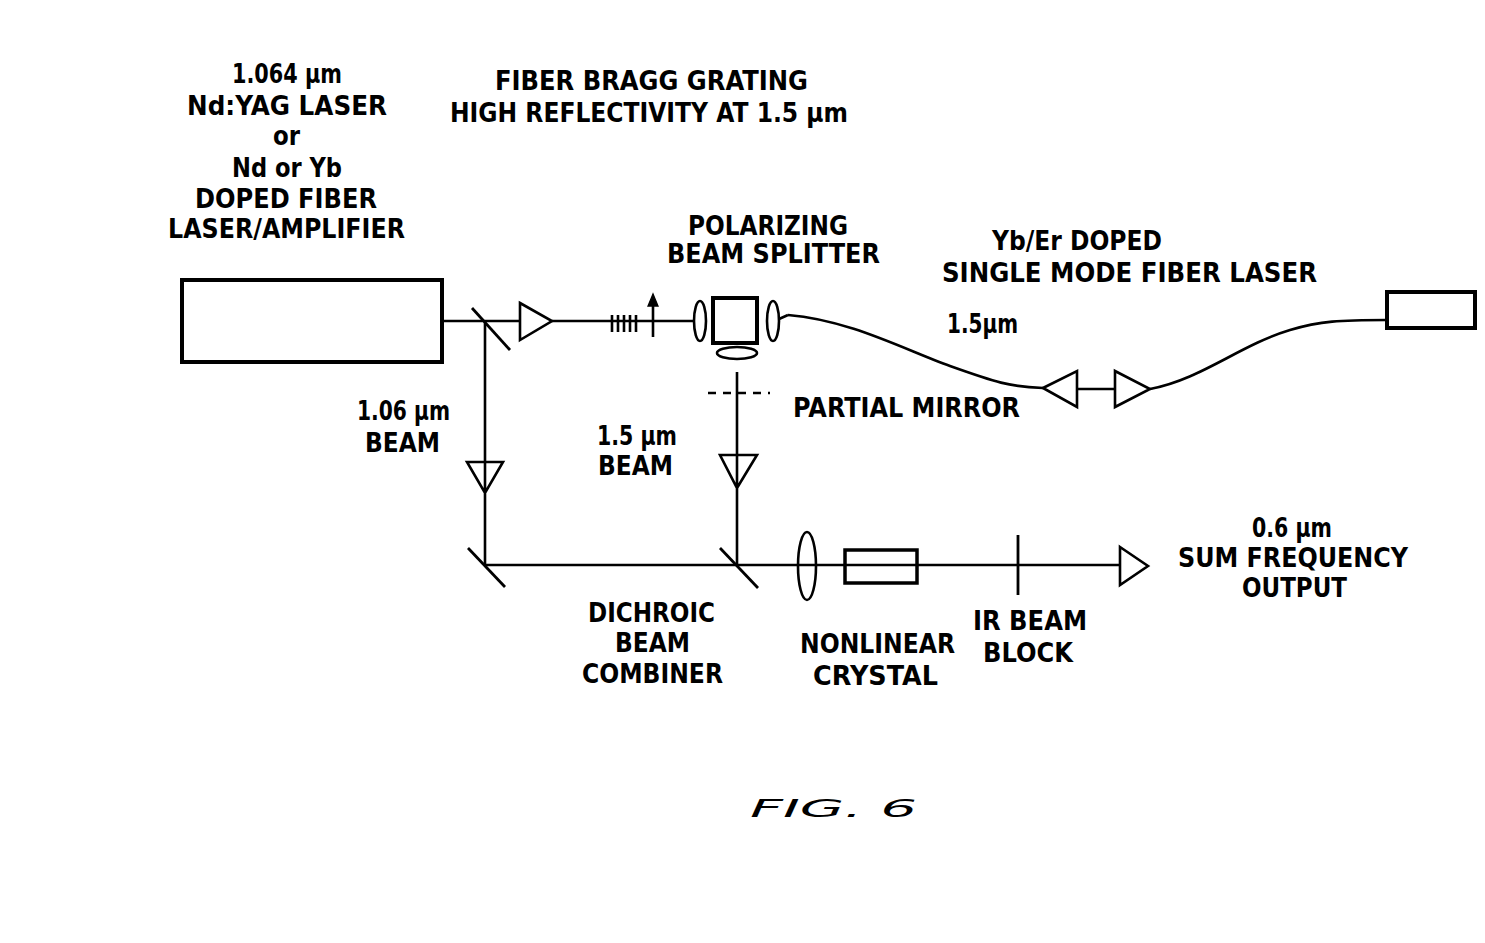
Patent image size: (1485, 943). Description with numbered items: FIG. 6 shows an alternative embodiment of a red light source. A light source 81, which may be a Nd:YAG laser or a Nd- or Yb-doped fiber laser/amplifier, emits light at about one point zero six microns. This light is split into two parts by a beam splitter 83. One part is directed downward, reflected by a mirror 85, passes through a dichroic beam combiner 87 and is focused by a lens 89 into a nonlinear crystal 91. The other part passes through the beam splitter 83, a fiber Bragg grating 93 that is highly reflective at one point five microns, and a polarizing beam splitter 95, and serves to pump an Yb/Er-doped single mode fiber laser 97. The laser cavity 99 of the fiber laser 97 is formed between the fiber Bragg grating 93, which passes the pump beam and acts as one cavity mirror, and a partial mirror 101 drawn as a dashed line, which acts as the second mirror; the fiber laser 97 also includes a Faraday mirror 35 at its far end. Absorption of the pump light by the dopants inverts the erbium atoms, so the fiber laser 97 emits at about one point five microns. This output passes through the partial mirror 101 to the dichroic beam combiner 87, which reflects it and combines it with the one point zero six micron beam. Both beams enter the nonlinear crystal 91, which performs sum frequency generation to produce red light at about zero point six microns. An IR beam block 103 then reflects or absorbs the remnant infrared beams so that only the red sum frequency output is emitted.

The light source 81 is at (323, 280).
The beam splitter 83 is at (476, 311).
The fiber Bragg grating 93 is at (607, 323).
The laser cavity 99 is at (679, 305).
The polarizing beam splitter 95 is at (733, 298).
The Yb/Er-doped single mode fiber laser 97 is at (1013, 385).
The Faraday mirror 35 is at (1470, 260).
The partial mirror 101 is at (773, 394).
The mirror 85 is at (477, 557).
The dichroic beam combiner 87 is at (745, 582).
The lens 89 is at (818, 540).
The nonlinear crystal 91 is at (872, 583).
The IR beam block 103 is at (1018, 575).